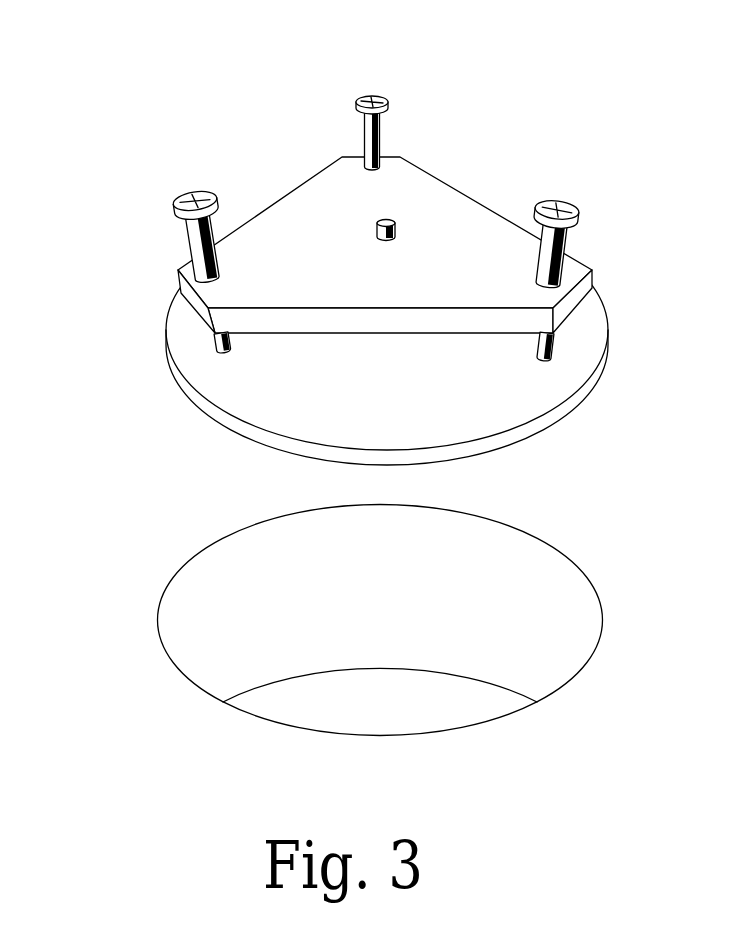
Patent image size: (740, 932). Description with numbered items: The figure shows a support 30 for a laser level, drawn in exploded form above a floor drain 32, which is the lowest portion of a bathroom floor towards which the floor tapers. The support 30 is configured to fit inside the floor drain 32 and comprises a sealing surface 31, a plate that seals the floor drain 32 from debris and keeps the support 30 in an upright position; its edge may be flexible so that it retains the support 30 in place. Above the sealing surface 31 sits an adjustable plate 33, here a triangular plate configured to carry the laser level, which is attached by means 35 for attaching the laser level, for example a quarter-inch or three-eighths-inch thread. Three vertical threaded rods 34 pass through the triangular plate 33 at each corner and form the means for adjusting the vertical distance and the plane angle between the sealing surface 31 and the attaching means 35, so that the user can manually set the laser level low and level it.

The support 30 is at (360, 240).
The sealing surface 31 is at (197, 377).
The floor drain 32 is at (183, 614).
The adjustable plate 33 is at (287, 233).
The threaded rod 34 is at (172, 206).
The means for attaching the laser level 35 is at (397, 228).